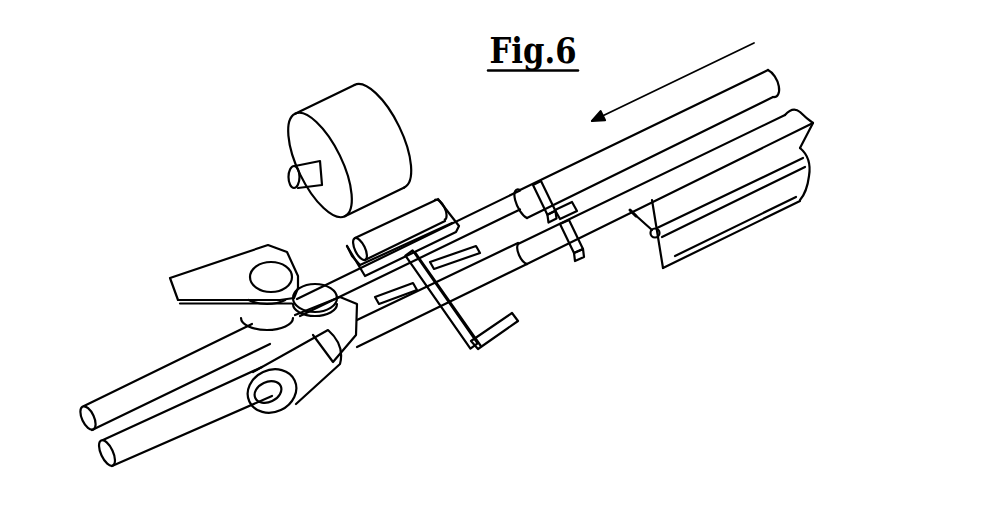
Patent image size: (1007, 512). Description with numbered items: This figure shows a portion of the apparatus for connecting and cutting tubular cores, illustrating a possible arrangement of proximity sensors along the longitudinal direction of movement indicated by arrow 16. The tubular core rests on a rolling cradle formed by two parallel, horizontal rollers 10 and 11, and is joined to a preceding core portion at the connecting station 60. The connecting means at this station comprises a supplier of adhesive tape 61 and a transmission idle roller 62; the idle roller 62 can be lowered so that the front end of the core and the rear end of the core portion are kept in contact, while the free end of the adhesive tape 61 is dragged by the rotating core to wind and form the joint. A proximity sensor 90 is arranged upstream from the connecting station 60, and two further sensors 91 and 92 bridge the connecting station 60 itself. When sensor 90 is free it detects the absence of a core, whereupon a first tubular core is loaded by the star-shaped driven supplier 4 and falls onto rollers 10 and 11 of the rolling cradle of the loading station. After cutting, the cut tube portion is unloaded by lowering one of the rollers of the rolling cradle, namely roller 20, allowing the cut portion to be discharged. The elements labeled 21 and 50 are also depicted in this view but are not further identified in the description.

The star-shaped driven supplier 4 is at (736, 272).
The roller 10 is at (783, 125).
The roller 11 is at (748, 97).
The arrow 16 is at (653, 93).
The roller 20 is at (170, 427).
The upper rod 21 is at (182, 367).
The drive assembly 50 is at (193, 243).
The connecting station 60 is at (347, 149).
The adhesive tape supplier 61 is at (300, 137).
The transmission idle roller 62 is at (418, 215).
The proximity sensor 90 is at (552, 190).
The sensor 91 is at (405, 284).
The sensor 92 is at (462, 262).